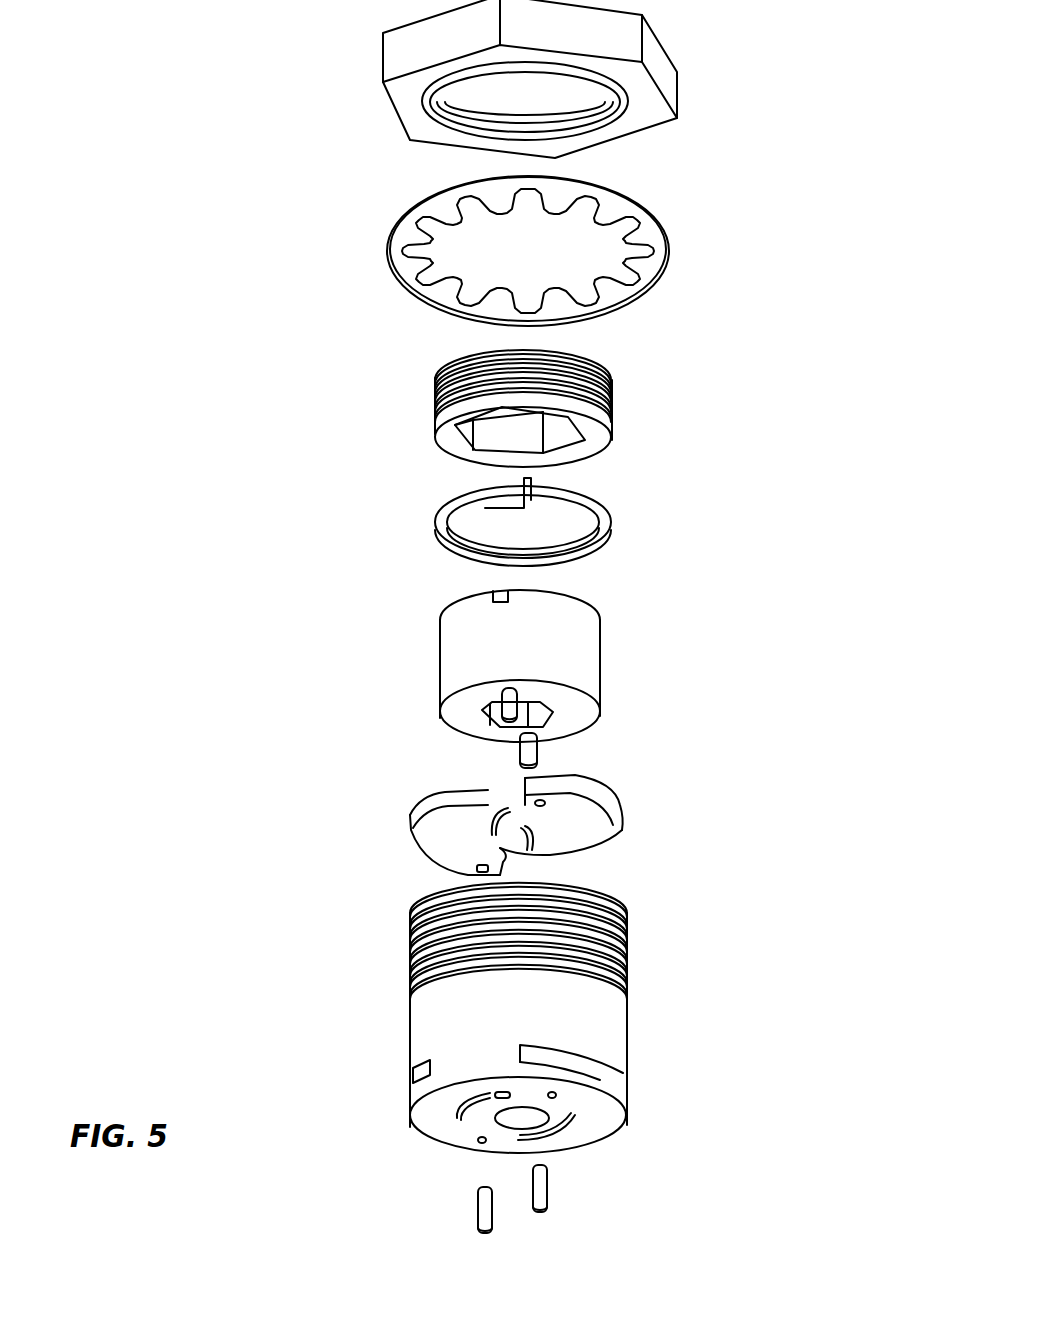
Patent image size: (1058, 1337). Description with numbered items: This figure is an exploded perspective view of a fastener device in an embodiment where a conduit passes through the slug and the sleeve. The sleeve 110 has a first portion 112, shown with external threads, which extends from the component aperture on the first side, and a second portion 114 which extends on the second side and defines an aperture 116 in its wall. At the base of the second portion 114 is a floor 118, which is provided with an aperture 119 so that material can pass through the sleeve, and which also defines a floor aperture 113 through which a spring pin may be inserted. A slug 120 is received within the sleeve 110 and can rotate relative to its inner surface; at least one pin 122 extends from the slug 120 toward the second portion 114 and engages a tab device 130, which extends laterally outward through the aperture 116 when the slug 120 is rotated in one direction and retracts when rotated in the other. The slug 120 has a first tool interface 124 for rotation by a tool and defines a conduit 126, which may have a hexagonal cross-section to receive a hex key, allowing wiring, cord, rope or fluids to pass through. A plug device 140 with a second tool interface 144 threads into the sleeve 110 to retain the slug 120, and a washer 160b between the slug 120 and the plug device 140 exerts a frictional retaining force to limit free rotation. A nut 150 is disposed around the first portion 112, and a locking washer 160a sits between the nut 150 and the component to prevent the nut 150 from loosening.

The sleeve 110 is at (512, 1081).
The first portion 112 is at (642, 905).
The floor aperture 113 is at (480, 1142).
The second portion 114 is at (397, 1070).
The aperture 116 is at (612, 1073).
The floor 118 is at (457, 1140).
The aperture 119 is at (507, 1120).
The slug 120 is at (518, 679).
The pin 122 is at (537, 758).
The first tool interface 124 is at (492, 592).
The conduit 126 is at (482, 710).
The tab device 130 is at (600, 830).
The plug device 140 is at (529, 408).
The second tool interface 144 is at (590, 437).
The nut 150 is at (413, 95).
The locking washer 160a is at (660, 225).
The washer 160b is at (615, 527).